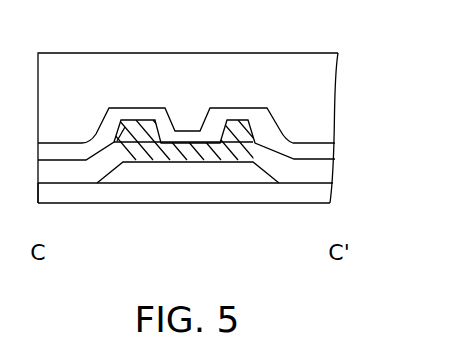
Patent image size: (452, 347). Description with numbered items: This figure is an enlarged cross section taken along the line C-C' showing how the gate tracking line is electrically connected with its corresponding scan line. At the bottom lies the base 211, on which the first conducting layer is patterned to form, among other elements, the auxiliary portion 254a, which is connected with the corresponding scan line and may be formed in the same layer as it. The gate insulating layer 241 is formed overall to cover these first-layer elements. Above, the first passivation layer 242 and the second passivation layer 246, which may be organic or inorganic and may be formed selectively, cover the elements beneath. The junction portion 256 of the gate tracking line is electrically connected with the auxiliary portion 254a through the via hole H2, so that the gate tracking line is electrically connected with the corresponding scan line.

The base 211 is at (85, 197).
The gate insulating layer 241 is at (294, 177).
The auxiliary portion 254a is at (155, 172).
The first passivation layer 242 is at (330, 152).
The junction portion 256 is at (141, 119).
The second passivation layer 246 is at (310, 63).
The via hole H2 is at (183, 136).